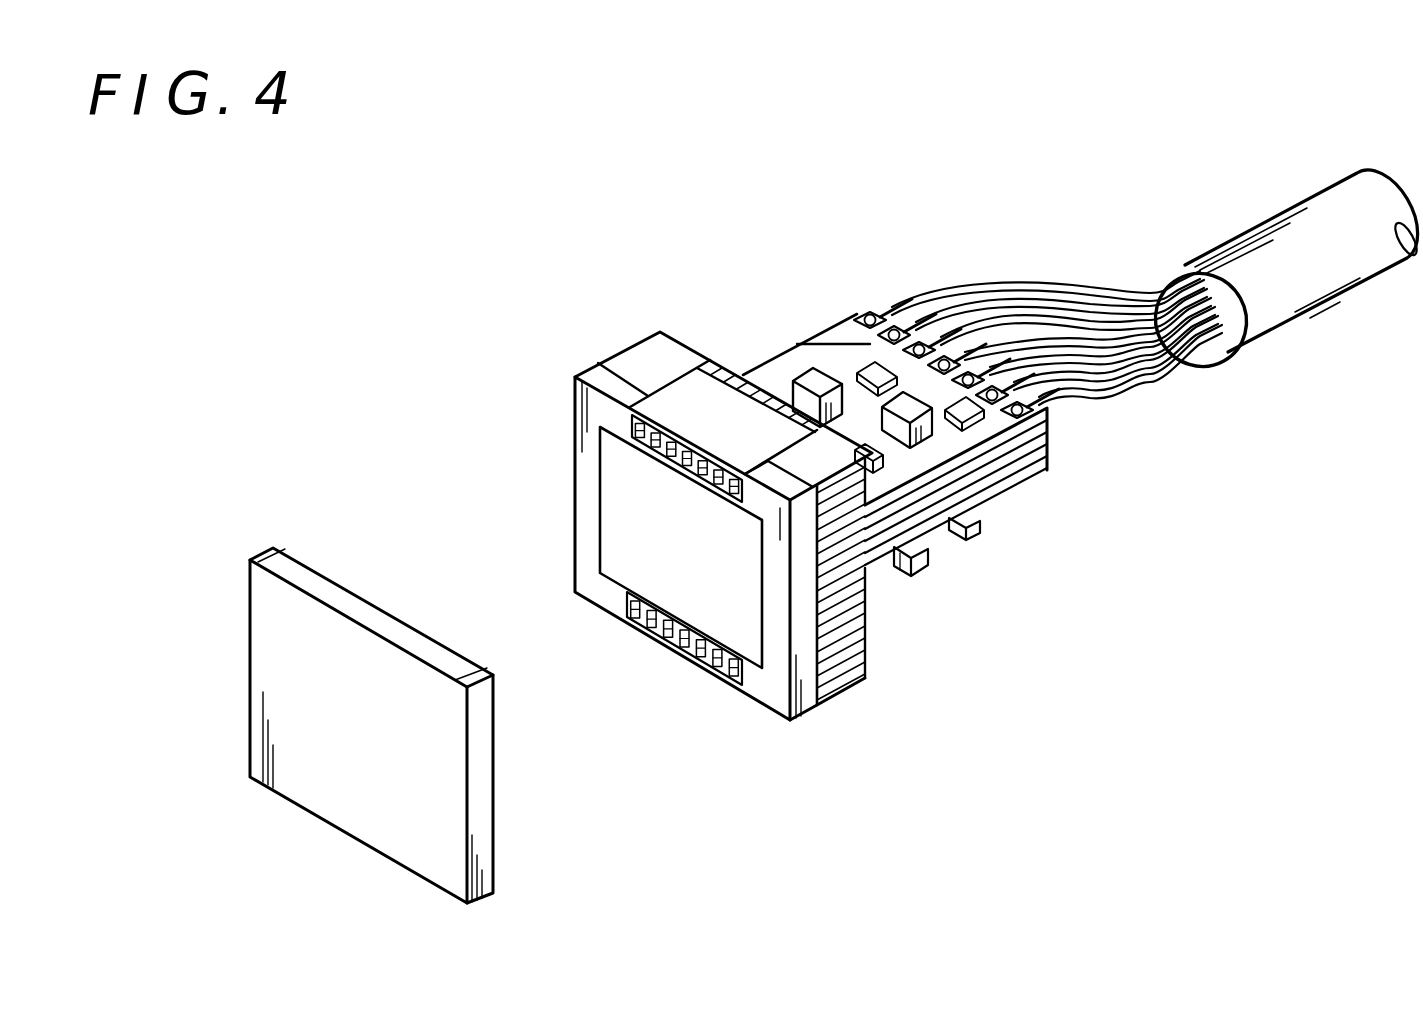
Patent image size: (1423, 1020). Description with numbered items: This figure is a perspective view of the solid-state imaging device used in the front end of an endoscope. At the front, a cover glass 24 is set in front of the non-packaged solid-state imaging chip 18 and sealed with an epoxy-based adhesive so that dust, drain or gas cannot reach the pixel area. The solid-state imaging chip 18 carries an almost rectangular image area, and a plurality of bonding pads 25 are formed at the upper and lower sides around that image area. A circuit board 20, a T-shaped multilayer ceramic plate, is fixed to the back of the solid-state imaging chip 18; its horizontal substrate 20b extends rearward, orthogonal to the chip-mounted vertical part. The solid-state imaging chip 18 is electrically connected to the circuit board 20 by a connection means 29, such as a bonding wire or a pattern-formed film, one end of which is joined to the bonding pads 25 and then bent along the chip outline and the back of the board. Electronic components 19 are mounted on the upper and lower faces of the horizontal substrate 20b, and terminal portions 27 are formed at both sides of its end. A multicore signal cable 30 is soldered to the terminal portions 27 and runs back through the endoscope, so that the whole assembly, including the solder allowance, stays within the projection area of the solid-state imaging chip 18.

The solid-state imaging chip 18 is at (575, 468).
The electronic components 19 is at (818, 382).
The circuit board 20 is at (778, 348).
The horizontal substrate 20b is at (997, 483).
The cover glass 24 is at (316, 583).
The bonding pads 25 is at (693, 478).
The terminal portions 27 is at (866, 316).
The connection means 29 is at (708, 395).
The signal cable 30 is at (982, 318).